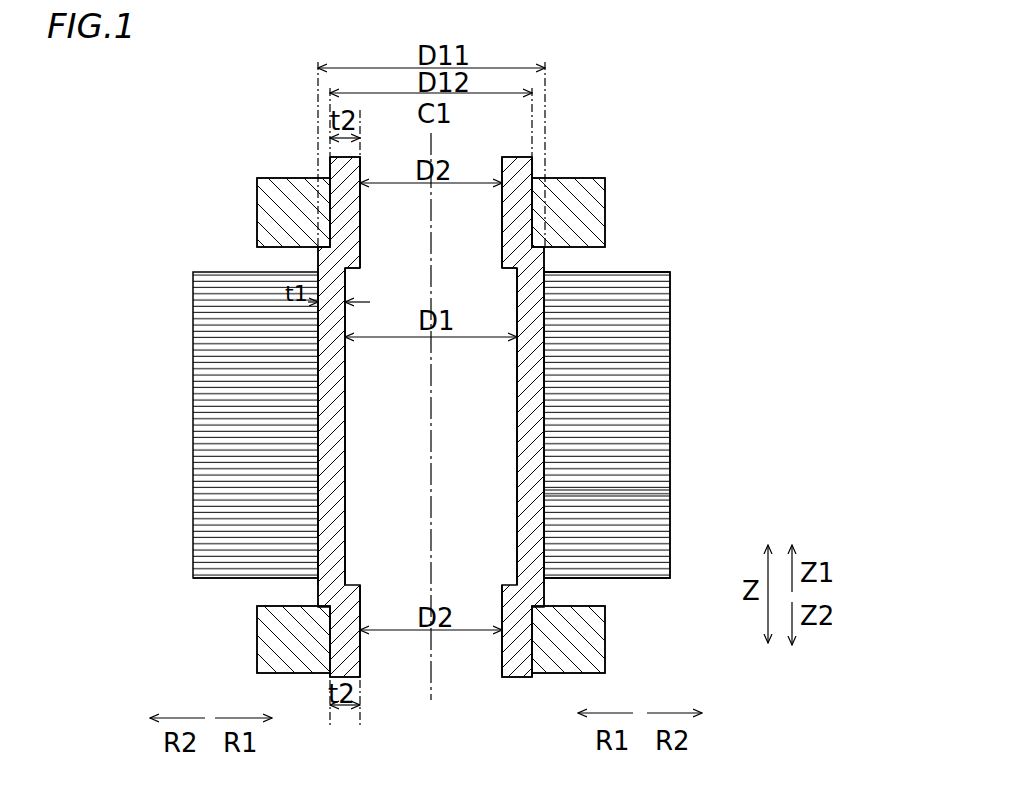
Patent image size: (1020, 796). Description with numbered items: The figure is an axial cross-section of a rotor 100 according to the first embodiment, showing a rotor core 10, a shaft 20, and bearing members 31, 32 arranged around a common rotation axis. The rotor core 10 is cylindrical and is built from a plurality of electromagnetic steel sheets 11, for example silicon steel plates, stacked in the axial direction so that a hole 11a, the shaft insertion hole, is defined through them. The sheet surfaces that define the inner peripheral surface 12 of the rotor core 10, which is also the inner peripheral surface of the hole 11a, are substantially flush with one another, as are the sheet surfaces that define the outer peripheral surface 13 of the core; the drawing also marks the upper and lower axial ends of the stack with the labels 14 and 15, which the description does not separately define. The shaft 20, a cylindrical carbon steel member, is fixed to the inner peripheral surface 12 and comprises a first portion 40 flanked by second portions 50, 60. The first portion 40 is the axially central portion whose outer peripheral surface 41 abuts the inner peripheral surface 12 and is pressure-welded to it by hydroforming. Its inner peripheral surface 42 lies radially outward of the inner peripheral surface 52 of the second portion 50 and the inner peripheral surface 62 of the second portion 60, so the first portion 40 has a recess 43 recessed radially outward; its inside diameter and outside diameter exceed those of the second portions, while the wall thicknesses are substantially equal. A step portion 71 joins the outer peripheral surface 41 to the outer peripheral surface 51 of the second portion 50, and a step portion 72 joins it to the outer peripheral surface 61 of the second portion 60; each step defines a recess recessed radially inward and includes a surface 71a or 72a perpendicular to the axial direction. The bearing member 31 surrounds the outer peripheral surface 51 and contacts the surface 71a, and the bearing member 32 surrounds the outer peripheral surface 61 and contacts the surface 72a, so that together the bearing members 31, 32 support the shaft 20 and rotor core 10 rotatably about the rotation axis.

The rotor 100 is at (200, 73).
The rotor core 10 is at (692, 288).
The electromagnetic steel sheets 11 is at (670, 340).
The hole 11a is at (318, 268).
The inner peripheral surface 12 is at (350, 560).
The outer peripheral surface 13 is at (670, 494).
The upper end surface of stator core 14 is at (665, 272).
The lower end surface of stator core 15 is at (637, 580).
The shaft 20 is at (378, 160).
The bearing member 31 is at (302, 207).
The bearing member 32 is at (298, 665).
The first portion 40 is at (346, 465).
The outer peripheral surface 41 is at (372, 499).
The inner peripheral surface 42 is at (346, 397).
The recess 43 is at (357, 320).
The second portion 50 is at (381, 220).
The outer peripheral surface 51 is at (328, 228).
The inner peripheral surface 52 is at (361, 239).
The second portion 60 is at (362, 620).
The outer peripheral surface 61 is at (328, 655).
The inner peripheral surface 62 is at (362, 640).
The step portion 71 is at (317, 237).
The surface 71a is at (322, 222).
The step portion 72 is at (325, 633).
The surface 72a is at (320, 607).